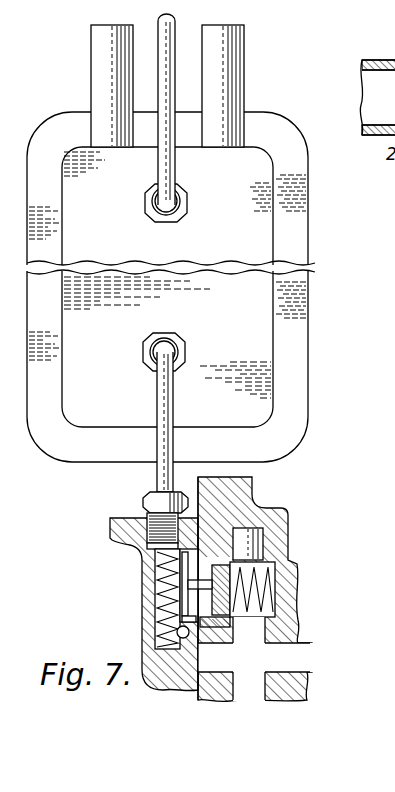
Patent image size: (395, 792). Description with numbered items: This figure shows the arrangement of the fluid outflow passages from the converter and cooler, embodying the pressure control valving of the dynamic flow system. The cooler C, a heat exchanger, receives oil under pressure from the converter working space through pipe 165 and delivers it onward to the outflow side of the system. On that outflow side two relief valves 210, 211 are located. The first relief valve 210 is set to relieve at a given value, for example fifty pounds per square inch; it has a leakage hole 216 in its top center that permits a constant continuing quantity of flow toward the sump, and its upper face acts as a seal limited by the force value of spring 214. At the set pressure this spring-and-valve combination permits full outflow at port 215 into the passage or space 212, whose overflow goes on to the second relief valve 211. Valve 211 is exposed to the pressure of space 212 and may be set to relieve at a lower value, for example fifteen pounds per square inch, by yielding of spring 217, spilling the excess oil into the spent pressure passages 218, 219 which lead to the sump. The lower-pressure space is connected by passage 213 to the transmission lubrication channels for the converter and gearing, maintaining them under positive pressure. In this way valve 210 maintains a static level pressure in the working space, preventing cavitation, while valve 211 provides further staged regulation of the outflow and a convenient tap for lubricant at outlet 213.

The pipe 165 is at (167, 30).
The cooler C is at (260, 245).
The relief valve 210 is at (147, 548).
The relief valve 211 is at (222, 603).
The passage 212 is at (205, 556).
The passage 213 is at (187, 637).
The spring 214 is at (155, 613).
The port 215 is at (153, 578).
The leakage hole 216 is at (163, 541).
The spring 217 is at (276, 586).
The spent pressure passage 218 is at (246, 695).
The spent pressure passage 219 is at (295, 658).